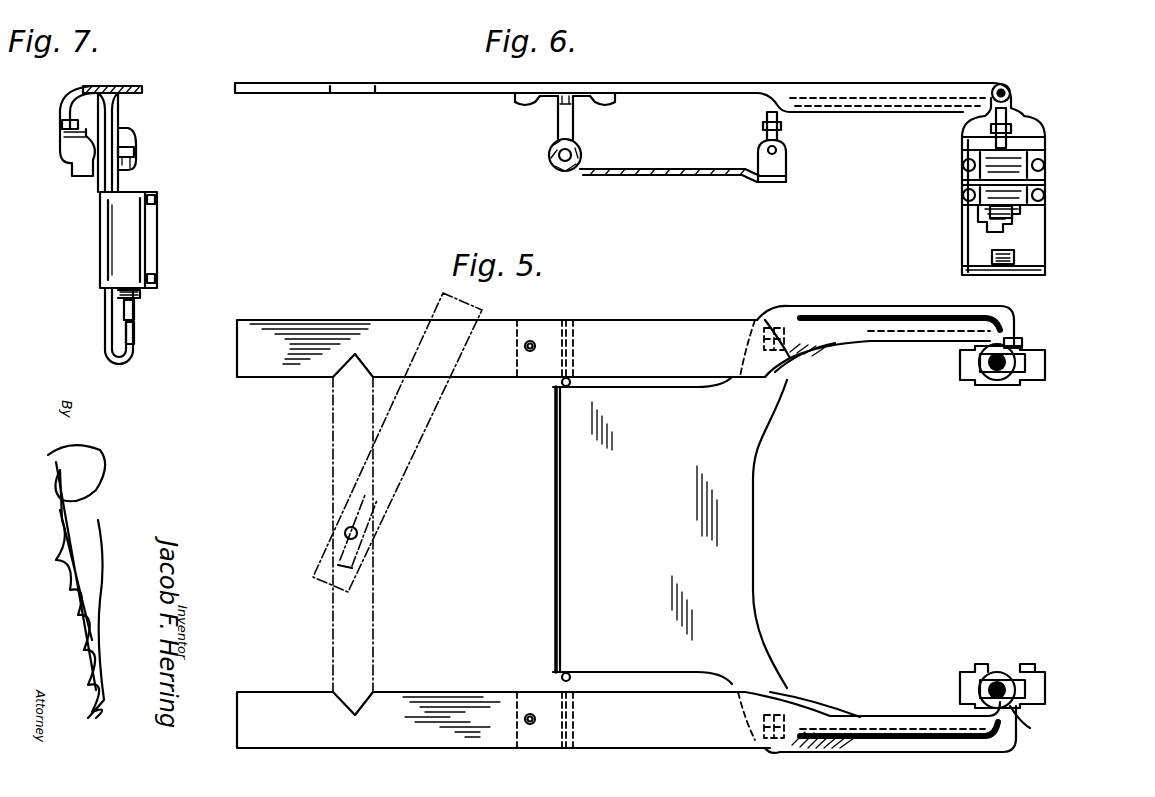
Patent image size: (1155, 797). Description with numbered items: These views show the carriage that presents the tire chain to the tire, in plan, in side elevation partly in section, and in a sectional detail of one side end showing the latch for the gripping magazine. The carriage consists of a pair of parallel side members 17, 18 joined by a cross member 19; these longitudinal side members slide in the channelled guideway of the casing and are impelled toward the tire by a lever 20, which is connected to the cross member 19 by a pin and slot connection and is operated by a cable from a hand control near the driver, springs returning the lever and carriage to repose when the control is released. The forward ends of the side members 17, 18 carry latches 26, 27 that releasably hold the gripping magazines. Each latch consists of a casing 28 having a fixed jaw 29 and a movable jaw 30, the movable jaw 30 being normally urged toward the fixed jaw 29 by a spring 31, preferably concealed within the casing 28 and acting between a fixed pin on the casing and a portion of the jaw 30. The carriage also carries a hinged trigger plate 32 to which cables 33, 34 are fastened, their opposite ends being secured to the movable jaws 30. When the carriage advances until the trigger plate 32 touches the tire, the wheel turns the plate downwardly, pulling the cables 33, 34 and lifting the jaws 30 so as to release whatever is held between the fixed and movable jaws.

In FIG. 7, the side member 17 is at (142, 91).
In FIG. 6, the side member 17 is at (437, 95).
In FIG. 5, the side member 17 is at (500, 320).
In FIG. 5, the side member 18 is at (450, 692).
In FIG. 5, the cross member 19 is at (333, 437).
In FIG. 5, the lever 20 is at (432, 410).
In FIG. 7, the latch 26 is at (104, 330).
In FIG. 6, the latch 26 is at (1046, 213).
In FIG. 5, the latch 26 is at (1046, 366).
In FIG. 5, the latch 27 is at (1046, 686).
In FIG. 7, the casing 28 is at (157, 215).
In FIG. 6, the casing 28 is at (961, 174).
In FIG. 5, the casing 28 is at (1018, 380).
In FIG. 7, the fixed jaw 29 is at (134, 336).
In FIG. 6, the fixed jaw 29 is at (1010, 257).
In FIG. 7, the movable jaw 30 is at (137, 160).
In FIG. 6, the movable jaw 30 is at (978, 213).
In FIG. 5, the movable jaw 30 is at (993, 375).
In FIG. 7, the spring 31 is at (141, 294).
In FIG. 6, the spring 31 is at (990, 220).
In FIG. 5, the spring 31 is at (1040, 356).
In FIG. 7, the hinged trigger plate 32 is at (95, 176).
In FIG. 6, the hinged trigger plate 32 is at (695, 176).
In FIG. 5, the hinged trigger plate 32 is at (753, 528).
In FIG. 7, the cable 33 is at (62, 124).
In FIG. 6, the cable 33 is at (767, 114).
In FIG. 5, the cable 33 is at (800, 322).
In FIG. 5, the cable 34 is at (830, 735).